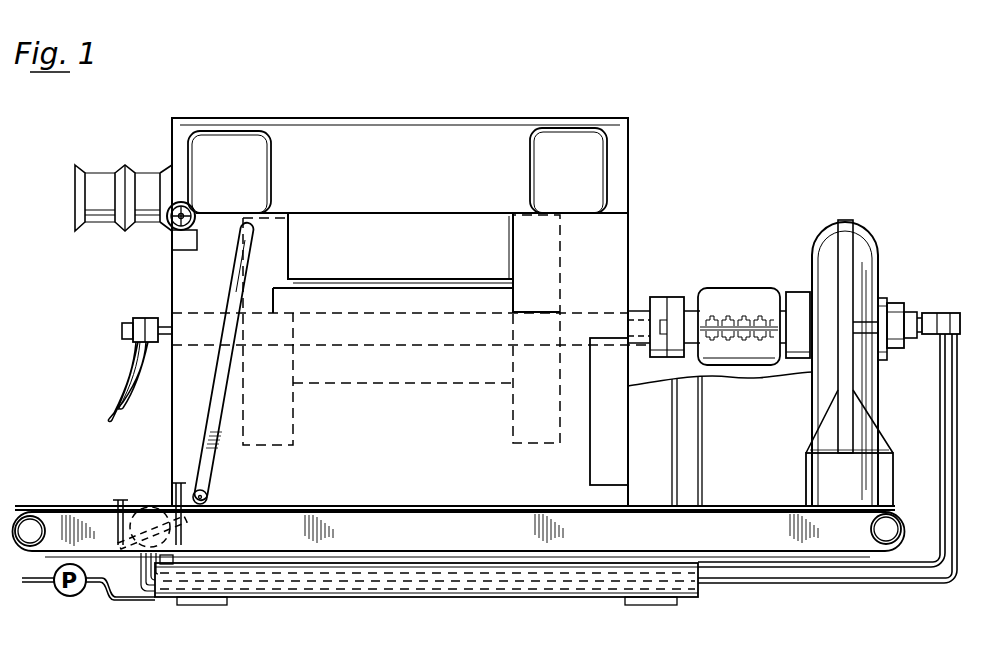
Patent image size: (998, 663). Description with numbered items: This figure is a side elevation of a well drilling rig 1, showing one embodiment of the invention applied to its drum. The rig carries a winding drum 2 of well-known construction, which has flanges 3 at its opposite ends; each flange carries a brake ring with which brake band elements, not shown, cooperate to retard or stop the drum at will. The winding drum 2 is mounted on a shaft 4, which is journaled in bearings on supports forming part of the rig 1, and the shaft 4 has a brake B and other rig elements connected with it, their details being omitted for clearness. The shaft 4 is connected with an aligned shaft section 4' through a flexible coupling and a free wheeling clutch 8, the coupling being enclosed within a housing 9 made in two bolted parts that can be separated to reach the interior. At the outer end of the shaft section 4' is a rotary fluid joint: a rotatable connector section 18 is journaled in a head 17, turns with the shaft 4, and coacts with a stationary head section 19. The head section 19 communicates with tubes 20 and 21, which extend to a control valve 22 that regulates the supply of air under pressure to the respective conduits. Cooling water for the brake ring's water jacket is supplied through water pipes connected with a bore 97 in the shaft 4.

The well drilling rig 1 is at (470, 112).
The winding drum 2 is at (366, 281).
The flanges 3 is at (512, 252).
The shaft 4 is at (153, 318).
The bore 97 is at (118, 393).
The control valve 22 is at (166, 483).
The housing 9 is at (744, 292).
The free wheeling clutch 8 is at (801, 296).
The brake B is at (862, 230).
The head 17 is at (882, 298).
The aligned shaft section 4' is at (897, 342).
The rotatable connector section 18 is at (924, 312).
The stationary head section 19 is at (951, 314).
The tube 20 is at (939, 400).
The tube 21 is at (950, 452).